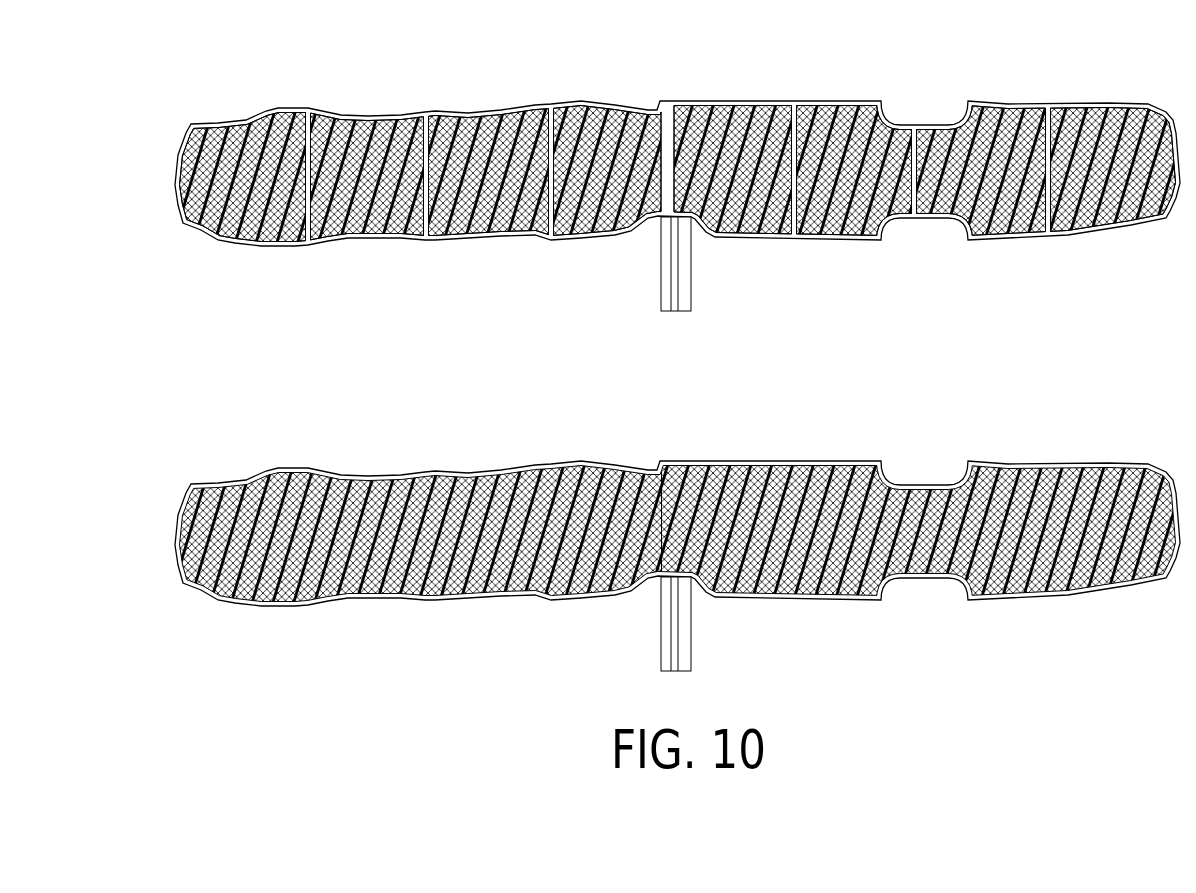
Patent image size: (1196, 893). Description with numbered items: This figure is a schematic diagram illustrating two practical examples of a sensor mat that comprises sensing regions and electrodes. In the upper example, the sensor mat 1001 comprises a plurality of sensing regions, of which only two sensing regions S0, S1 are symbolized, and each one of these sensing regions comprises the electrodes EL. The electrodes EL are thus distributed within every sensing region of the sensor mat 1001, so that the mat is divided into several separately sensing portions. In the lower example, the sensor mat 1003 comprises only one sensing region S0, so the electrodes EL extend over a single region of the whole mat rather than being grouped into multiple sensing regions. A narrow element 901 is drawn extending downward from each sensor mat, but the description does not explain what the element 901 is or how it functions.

The electrodes EL is at (357, 104).
The sensing region S0 is at (582, 99).
The sensing region S1 is at (732, 96).
The sensor mat 1001 is at (1047, 96).
The sensor mat 1003 is at (1048, 458).
The connection trace 901 is at (676, 270).